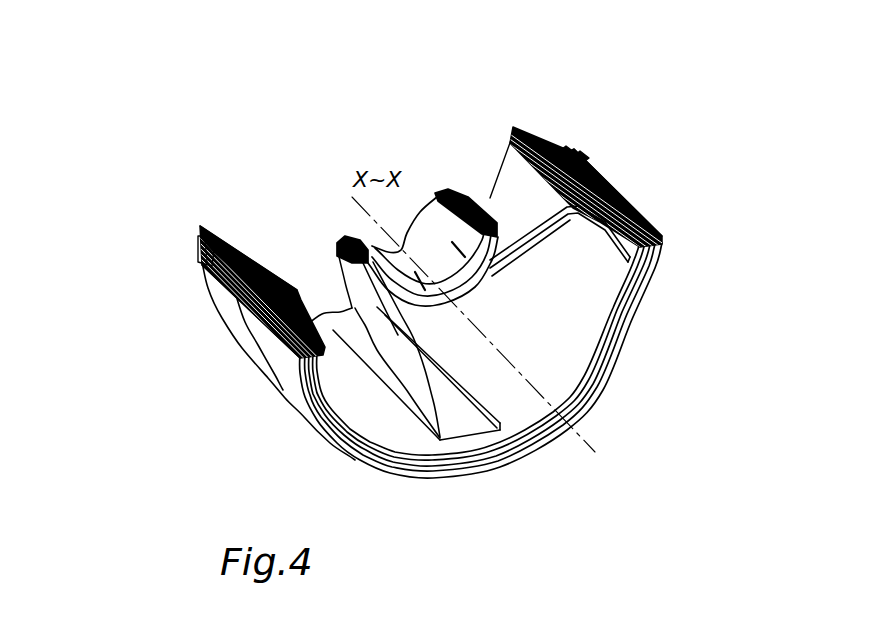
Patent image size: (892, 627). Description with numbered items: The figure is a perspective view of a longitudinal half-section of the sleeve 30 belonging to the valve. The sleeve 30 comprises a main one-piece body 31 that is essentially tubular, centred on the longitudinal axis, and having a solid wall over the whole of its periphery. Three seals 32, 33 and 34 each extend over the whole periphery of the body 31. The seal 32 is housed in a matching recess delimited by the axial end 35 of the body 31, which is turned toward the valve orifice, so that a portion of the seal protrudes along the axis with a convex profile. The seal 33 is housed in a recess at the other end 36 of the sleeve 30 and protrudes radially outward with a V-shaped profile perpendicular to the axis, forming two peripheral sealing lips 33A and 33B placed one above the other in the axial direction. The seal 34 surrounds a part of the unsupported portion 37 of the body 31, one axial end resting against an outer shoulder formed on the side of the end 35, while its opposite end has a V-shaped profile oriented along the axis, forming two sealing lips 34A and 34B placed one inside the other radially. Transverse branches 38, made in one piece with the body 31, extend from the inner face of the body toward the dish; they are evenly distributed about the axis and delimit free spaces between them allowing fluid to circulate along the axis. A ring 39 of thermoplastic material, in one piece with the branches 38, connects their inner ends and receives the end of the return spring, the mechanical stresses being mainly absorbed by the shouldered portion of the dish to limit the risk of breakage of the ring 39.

The sleeve 30 is at (263, 393).
The main one-piece body 31 is at (256, 21).
The seal 32 is at (660, 247).
The seal 33 is at (207, 223).
The sealing lip 33A is at (524, 128).
The sealing lip 33B is at (541, 128).
The seal 34 is at (200, 260).
The sealing lip 34A is at (566, 152).
The sealing lip 34B is at (577, 152).
The axial end 35 is at (303, 327).
The end 36 is at (220, 222).
The unsupported portion 37 is at (262, 250).
The transverse branches 38 is at (540, 247).
The ring 39 is at (467, 198).